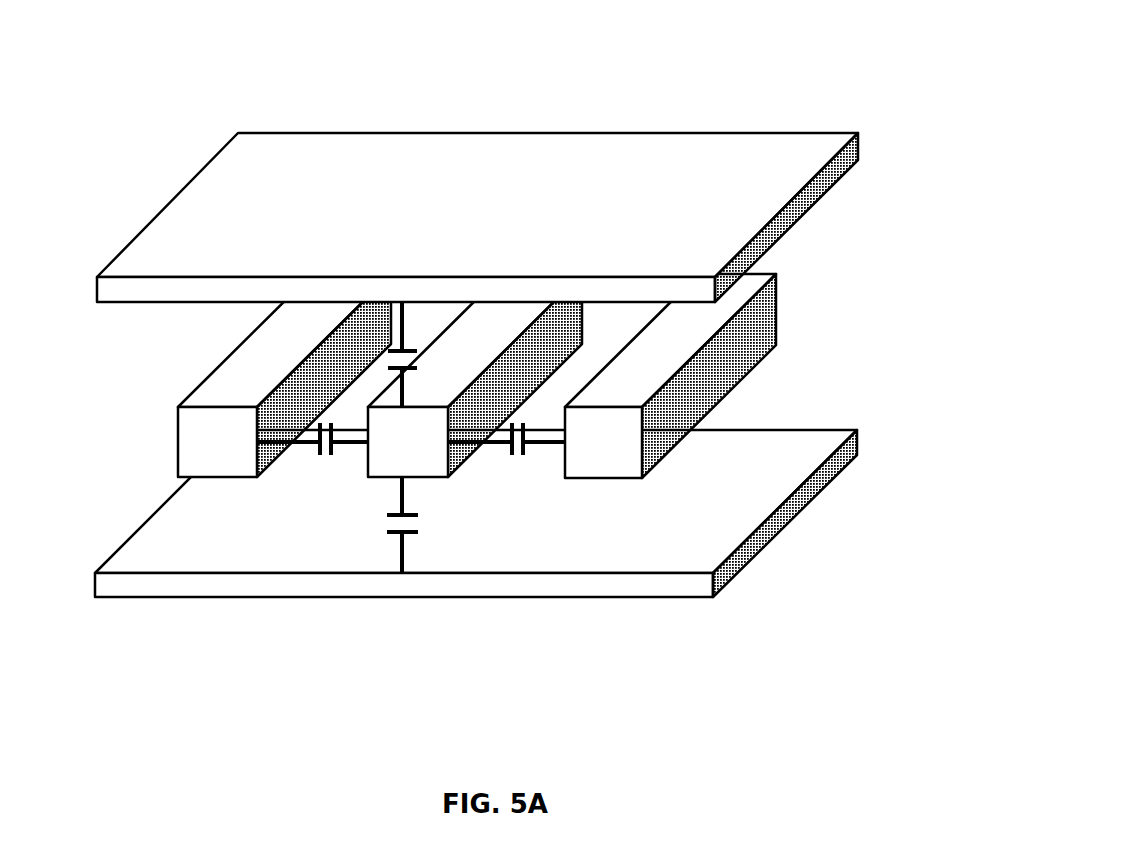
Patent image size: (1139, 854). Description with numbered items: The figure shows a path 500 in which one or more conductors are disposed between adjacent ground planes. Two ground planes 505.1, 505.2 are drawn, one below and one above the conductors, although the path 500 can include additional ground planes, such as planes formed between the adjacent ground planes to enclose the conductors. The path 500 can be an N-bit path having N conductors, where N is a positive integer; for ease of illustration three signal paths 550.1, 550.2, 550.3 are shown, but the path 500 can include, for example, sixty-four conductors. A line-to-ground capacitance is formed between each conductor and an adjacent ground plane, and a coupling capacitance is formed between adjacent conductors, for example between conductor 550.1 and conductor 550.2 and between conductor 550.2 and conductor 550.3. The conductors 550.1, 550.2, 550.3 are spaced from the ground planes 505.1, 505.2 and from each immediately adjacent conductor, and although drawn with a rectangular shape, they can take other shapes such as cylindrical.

The path 500 is at (597, 351).
The ground plane 505.1 is at (697, 600).
The ground plane 505.2 is at (147, 226).
The conductor 550.1 is at (183, 403).
The conductor 550.2 is at (467, 458).
The conductor 550.3 is at (603, 481).